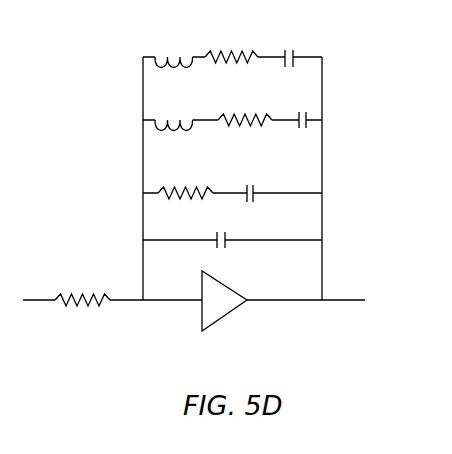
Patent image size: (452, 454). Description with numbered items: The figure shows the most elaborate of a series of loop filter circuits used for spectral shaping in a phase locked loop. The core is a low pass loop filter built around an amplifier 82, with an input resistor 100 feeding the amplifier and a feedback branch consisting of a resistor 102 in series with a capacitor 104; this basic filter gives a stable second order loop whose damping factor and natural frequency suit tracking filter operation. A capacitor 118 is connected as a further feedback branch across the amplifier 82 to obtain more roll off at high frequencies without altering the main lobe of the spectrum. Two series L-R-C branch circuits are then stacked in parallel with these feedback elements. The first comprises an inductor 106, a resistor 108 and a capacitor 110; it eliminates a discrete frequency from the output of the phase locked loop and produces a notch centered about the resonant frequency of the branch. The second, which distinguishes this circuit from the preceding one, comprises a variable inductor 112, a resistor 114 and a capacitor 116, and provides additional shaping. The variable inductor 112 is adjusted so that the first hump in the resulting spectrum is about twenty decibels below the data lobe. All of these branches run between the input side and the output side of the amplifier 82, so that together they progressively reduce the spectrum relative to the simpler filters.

The amplifier 82 is at (230, 317).
The resistor 100 is at (82, 315).
The resistor 102 is at (193, 186).
The capacitor 104 is at (256, 185).
The inductor 106 is at (163, 113).
The resistor 108 is at (250, 98).
The capacitor 110 is at (307, 112).
The variable inductor 112 is at (163, 52).
The resistor 114 is at (237, 52).
The capacitor 116 is at (290, 48).
The capacitor 118 is at (230, 248).